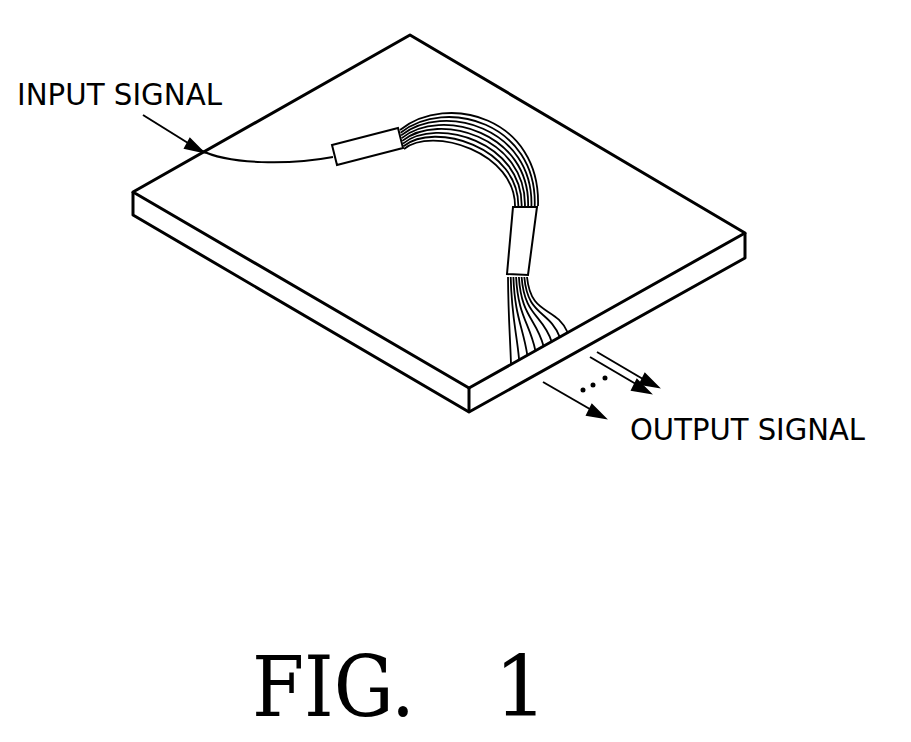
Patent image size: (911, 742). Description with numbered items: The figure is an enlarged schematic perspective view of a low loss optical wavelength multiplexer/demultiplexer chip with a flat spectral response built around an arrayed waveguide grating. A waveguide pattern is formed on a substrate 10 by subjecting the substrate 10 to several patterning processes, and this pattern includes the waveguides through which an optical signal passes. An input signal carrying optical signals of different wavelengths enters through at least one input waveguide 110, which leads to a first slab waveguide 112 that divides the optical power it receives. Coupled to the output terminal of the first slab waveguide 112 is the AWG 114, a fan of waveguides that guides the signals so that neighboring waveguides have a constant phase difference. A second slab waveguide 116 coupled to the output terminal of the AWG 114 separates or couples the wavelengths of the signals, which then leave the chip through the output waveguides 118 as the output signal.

The substrate 10 is at (697, 270).
The input waveguide 110 is at (247, 183).
The first slab waveguide 112 is at (370, 140).
The AWG 114 is at (505, 208).
The second slab waveguide 116 is at (525, 252).
The output waveguides 118 is at (508, 318).